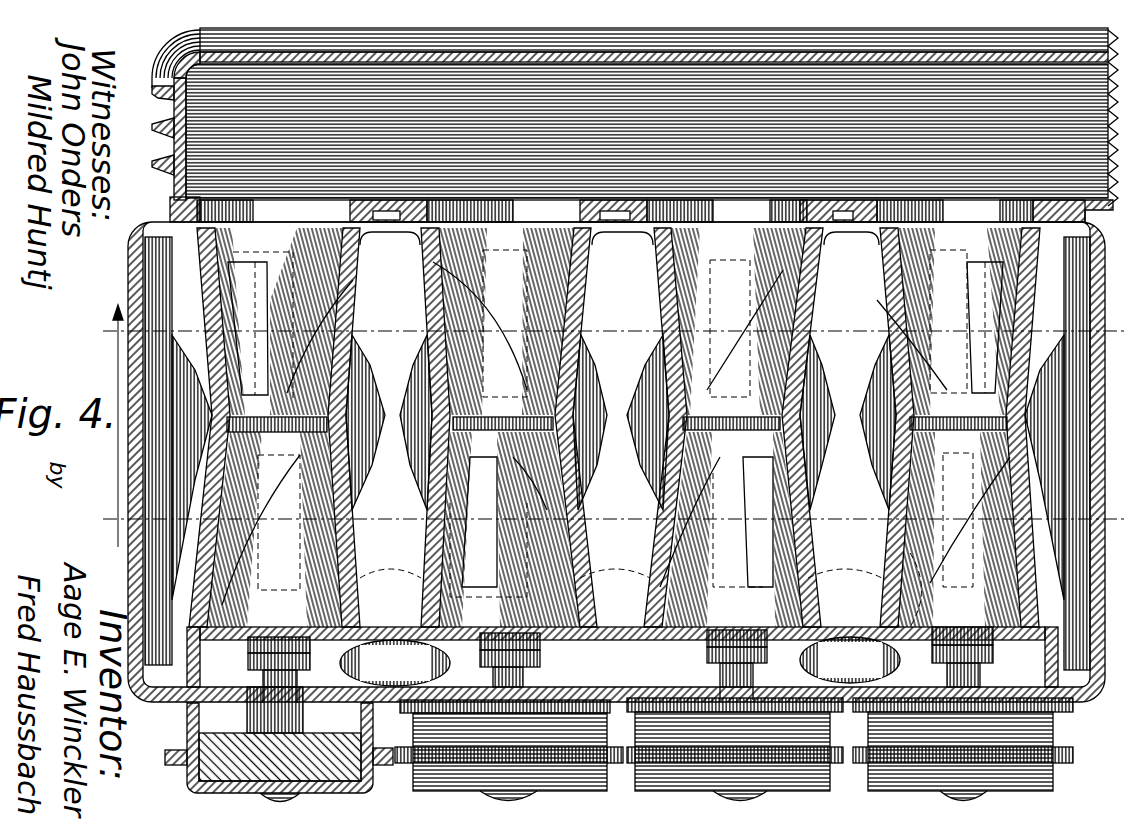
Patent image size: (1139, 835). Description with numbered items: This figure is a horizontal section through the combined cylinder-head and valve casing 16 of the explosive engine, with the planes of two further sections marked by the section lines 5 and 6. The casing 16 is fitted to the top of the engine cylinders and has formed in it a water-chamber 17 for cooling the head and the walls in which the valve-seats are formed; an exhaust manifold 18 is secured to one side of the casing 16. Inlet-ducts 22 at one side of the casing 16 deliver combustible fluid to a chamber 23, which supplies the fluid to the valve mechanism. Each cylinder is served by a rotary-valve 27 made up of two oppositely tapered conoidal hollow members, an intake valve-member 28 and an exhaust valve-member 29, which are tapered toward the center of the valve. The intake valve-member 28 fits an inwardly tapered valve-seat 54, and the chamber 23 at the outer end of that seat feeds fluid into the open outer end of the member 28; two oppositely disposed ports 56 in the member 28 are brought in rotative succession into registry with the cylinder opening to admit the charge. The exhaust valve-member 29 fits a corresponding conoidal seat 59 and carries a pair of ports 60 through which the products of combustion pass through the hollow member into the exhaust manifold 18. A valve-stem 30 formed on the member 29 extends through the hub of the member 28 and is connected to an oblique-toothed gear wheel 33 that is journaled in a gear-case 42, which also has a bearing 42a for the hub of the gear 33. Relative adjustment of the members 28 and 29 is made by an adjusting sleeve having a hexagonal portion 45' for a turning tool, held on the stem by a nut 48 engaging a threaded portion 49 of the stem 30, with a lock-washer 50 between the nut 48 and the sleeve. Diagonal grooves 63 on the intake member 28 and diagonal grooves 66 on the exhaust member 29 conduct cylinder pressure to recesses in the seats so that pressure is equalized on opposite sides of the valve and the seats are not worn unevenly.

The section line 5- 5 is at (612, 522).
The section line 6- 6 is at (606, 426).
The combined cylinder-head and valve casing 16 is at (129, 275).
The water-chamber 17 is at (617, 453).
The exhaust manifold 18 is at (635, 125).
The inlet-duct 22 is at (620, 661).
The chamber 23 is at (622, 657).
The rotary-valve 27 is at (627, 425).
The intake valve-member 28 is at (615, 540).
The exhaust valve-member 29 is at (491, 313).
The valve-stem 30 is at (503, 413).
The oblique-toothed gear wheel 33 is at (212, 775).
The gear-case 42 is at (424, 723).
The bearing 42a is at (303, 695).
The hexagonal portion 45' is at (601, 643).
The nut 48 is at (262, 680).
The threaded portion 49 is at (300, 668).
The lock-washer 50 is at (250, 662).
The valve-seat 54 is at (425, 541).
The port 56 is at (350, 516).
The conoidal seat 59 is at (362, 300).
The port 60 is at (652, 301).
The diagonal groove 63 is at (278, 492).
The diagonal groove 66 is at (310, 362).